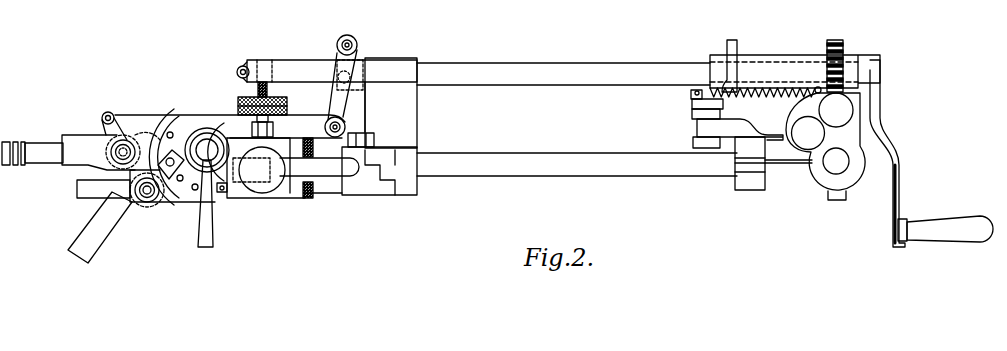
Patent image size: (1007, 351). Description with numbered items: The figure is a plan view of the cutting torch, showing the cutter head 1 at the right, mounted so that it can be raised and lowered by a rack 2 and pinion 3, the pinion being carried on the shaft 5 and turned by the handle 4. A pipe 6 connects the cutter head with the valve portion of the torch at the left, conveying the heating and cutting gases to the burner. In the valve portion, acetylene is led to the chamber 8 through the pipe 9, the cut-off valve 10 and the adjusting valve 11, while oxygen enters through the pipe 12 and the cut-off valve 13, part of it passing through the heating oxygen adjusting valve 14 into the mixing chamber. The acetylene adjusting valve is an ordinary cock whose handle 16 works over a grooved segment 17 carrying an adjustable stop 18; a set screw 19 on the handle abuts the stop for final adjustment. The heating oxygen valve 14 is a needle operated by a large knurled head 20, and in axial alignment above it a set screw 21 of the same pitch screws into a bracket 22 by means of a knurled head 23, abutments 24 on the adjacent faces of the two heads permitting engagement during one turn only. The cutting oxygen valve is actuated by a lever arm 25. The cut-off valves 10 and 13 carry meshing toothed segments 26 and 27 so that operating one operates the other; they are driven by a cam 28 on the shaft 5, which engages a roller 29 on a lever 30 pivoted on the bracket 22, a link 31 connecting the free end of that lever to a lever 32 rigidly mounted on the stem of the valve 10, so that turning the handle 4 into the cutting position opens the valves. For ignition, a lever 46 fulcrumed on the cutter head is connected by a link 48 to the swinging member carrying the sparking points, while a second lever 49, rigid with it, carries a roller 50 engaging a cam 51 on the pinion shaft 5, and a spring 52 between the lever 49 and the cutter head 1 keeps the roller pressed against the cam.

The cutter head 1 is at (820, 175).
The rack 2 is at (838, 110).
The pinion 3 is at (839, 48).
The handle 4 is at (953, 227).
The shaft 5 is at (649, 72).
The pipe 6 is at (632, 168).
The chamber 8 is at (297, 192).
The pipe 9 is at (40, 155).
The valve 10 is at (122, 140).
The adjusting valve 11 is at (207, 128).
The pipe 12 is at (90, 190).
The valve 13 is at (144, 200).
The heating oxygen adjusting valve 14 is at (265, 192).
The handle 16 is at (203, 238).
The grooved segment 17 is at (163, 115).
The adjustable stop 18 is at (150, 196).
The set screw 19 is at (224, 194).
The knurled head 20 is at (288, 110).
The set screw 21 is at (258, 90).
The bracket 22 is at (270, 70).
The knurled head 23 is at (279, 98).
The abutments 24 is at (239, 99).
The lever arm 25 is at (308, 168).
The toothed segment 26 is at (143, 135).
The toothed segment 27 is at (168, 182).
The cam 28 is at (366, 87).
The roller 29 is at (341, 70).
The lever 30 is at (340, 118).
The link 31 is at (314, 128).
The lever 32 is at (119, 150).
The lever 46 is at (708, 148).
The link 48 is at (762, 134).
The second lever 49 is at (700, 110).
The roller 50 is at (690, 104).
The cam 51 is at (718, 92).
The spring 52 is at (792, 88).